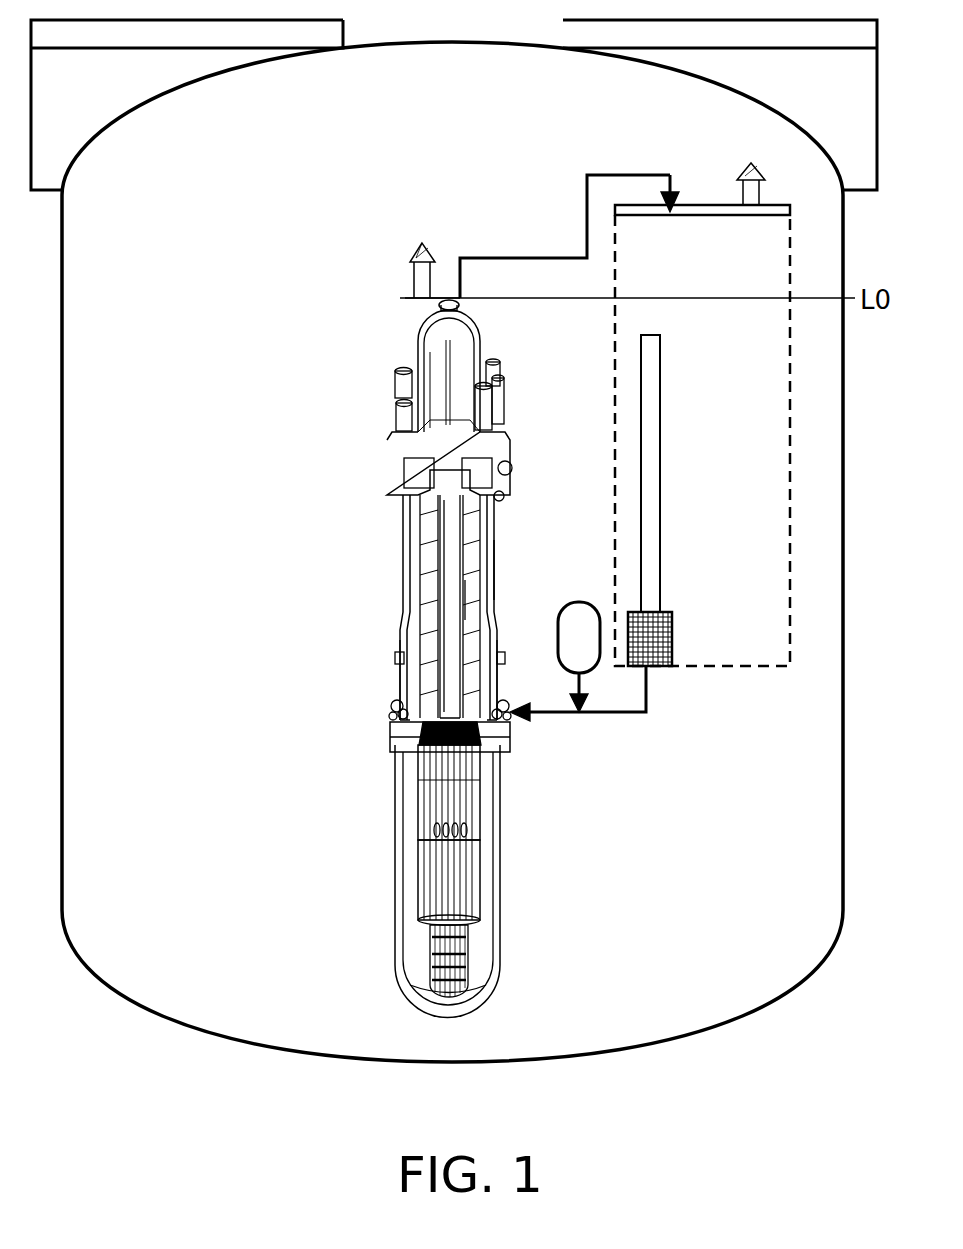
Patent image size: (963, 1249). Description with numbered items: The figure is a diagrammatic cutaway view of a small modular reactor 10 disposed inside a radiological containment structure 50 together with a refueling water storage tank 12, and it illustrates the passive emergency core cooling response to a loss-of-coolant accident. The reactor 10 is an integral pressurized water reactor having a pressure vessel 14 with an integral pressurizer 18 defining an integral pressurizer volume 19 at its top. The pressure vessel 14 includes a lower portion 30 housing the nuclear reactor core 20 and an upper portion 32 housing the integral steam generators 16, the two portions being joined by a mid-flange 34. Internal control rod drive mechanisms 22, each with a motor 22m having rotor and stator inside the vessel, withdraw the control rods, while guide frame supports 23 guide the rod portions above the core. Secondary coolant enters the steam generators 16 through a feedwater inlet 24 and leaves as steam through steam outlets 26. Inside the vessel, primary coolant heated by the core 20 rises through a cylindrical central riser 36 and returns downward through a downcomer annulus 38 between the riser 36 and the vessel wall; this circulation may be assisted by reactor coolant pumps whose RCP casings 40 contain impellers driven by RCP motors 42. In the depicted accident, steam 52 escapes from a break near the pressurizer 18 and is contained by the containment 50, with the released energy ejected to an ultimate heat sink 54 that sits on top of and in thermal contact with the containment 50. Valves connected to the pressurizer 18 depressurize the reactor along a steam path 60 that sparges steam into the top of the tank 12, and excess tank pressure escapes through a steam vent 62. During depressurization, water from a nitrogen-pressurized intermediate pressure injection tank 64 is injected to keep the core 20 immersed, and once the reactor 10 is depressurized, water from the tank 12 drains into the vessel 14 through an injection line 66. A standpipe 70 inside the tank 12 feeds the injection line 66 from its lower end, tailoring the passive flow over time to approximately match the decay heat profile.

The small modular reactor 10 is at (335, 390).
The refueling water storage tank 12 is at (698, 448).
The pressure vessel 14 is at (412, 535).
The integral steam generators 16 is at (425, 568).
The integral pressurizer 18 is at (478, 350).
The integral pressurizer volume 19 is at (442, 334).
The nuclear reactor core 20 is at (445, 957).
The control rod drive mechanisms 22 is at (440, 808).
The motor 22m is at (430, 830).
The guide frame supports 23 is at (443, 880).
The feedwater inlet 24 is at (408, 680).
The steam outlets 26 is at (398, 656).
The lower portion 30 is at (497, 890).
The upper portion 32 is at (488, 562).
The mid-flange 34 is at (497, 740).
The central riser 36 is at (452, 512).
The downcomer annulus 38 is at (472, 597).
The RCP casings 40 is at (416, 470).
The RCP motors 42 is at (498, 386).
The radiological containment structure 50 is at (146, 1022).
The steam 52 is at (393, 251).
The ultimate heat sink 54 is at (96, 96).
The steam path 60 is at (548, 258).
The steam vent 62 is at (737, 176).
The intermediate pressure injection tank 64 is at (555, 640).
The injection line 66 is at (608, 731).
The standpipe 70 is at (606, 466).